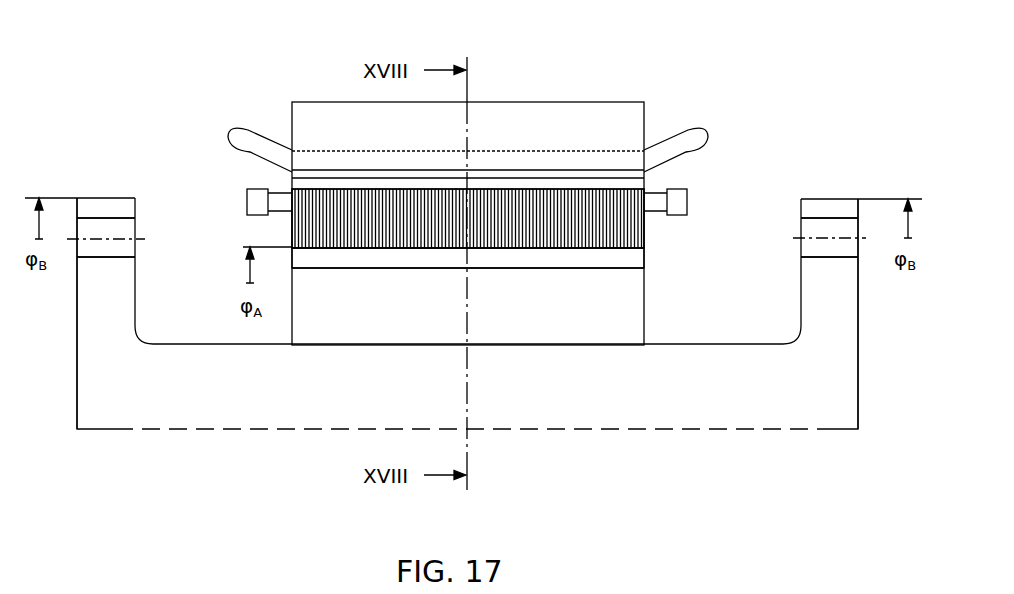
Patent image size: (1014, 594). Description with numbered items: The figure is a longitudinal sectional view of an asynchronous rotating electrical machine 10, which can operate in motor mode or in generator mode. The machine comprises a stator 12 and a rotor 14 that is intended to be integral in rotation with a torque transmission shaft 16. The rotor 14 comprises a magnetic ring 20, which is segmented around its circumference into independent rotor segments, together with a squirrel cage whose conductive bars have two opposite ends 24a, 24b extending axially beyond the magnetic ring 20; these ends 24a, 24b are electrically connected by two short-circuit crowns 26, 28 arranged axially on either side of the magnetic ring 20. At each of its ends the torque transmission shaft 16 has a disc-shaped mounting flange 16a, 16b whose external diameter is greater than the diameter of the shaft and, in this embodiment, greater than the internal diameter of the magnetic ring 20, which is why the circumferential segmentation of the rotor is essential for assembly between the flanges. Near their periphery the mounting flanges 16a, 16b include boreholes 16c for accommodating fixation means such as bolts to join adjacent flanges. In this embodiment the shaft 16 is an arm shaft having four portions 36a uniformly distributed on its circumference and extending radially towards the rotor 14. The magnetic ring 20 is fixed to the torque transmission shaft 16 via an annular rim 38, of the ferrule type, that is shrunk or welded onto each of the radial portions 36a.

The asynchronous rotating electrical machine 10 is at (788, 147).
The stator 12 is at (632, 118).
The rotor 14 is at (678, 225).
The torque transmission shaft 16 is at (757, 418).
The mounting flange 16a is at (90, 378).
The mounting flange 16b is at (845, 377).
The boreholes 16c is at (85, 257).
The magnetic ring 20 is at (305, 236).
The end of conductive element 24a is at (277, 200).
The end of conductive element 24b is at (656, 192).
The short-circuit crown 26 is at (258, 204).
The short-circuit crown 28 is at (683, 203).
The radial portions 36a is at (630, 323).
The annular rim 38 is at (633, 255).